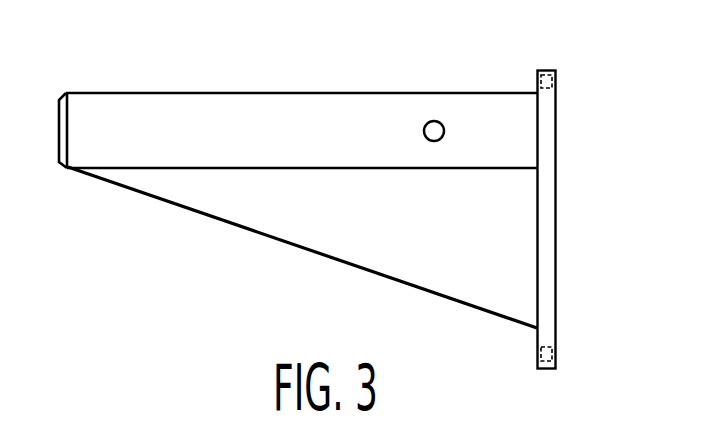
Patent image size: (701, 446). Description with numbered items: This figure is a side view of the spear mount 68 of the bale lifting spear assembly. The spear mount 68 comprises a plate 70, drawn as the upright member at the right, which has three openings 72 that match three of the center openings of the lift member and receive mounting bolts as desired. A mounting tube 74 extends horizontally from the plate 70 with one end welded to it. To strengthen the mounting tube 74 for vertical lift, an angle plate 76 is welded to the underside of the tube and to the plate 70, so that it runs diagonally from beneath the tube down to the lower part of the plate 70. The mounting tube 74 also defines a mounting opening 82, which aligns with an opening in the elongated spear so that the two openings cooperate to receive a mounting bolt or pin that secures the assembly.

The spear mount 68 is at (335, 204).
The plate 70 is at (548, 250).
The openings 72 is at (558, 83).
The mounting tube 74 is at (128, 147).
The angle plate 76 is at (260, 210).
The mounting opening 82 is at (434, 130).